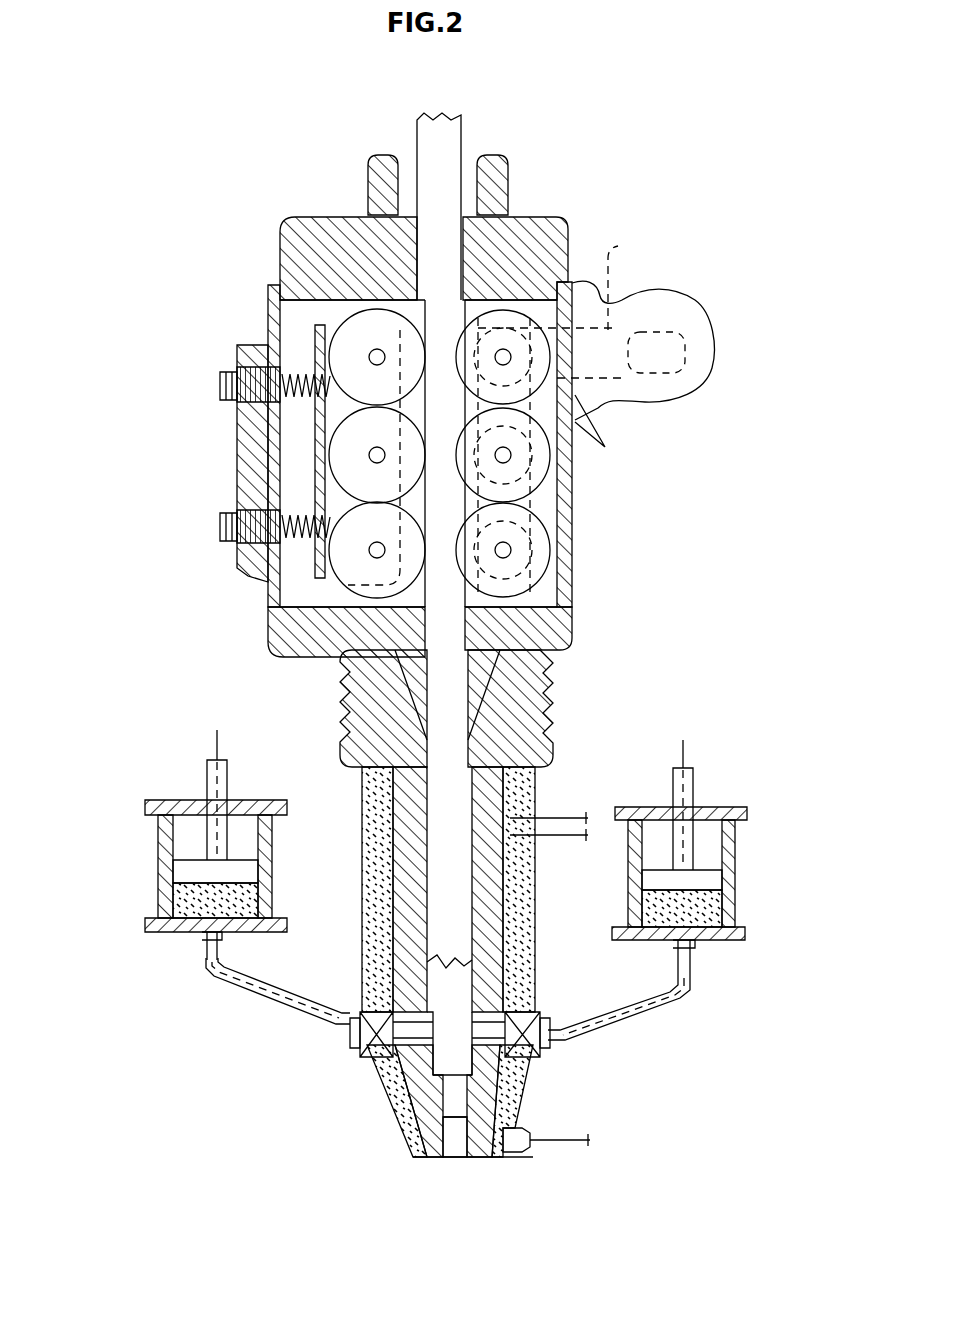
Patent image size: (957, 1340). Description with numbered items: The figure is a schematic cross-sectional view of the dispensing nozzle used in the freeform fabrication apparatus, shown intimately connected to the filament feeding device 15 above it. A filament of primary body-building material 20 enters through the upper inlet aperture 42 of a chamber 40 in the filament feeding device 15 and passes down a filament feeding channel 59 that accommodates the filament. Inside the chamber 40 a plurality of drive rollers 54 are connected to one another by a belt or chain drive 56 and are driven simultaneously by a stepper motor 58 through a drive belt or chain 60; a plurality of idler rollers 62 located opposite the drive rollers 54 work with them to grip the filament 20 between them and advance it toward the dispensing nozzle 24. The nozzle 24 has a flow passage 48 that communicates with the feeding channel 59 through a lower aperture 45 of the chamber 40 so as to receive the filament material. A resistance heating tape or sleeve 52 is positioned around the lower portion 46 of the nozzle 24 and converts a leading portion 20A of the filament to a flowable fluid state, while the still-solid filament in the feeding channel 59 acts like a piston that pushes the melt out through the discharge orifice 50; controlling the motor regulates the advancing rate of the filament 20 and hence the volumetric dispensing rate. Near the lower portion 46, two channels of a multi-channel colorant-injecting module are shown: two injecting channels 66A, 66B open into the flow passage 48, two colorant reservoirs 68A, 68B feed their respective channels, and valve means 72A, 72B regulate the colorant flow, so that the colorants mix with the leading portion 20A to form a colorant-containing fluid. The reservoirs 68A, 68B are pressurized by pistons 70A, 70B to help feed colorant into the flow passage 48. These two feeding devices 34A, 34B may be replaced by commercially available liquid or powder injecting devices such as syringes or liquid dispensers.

The filament feeding device 15 is at (778, 120).
The primary body-building material 20 is at (457, 925).
The leading portion of the filament material 20A is at (410, 1103).
The dispensing nozzle 24 is at (598, 754).
The feeding device 34A is at (130, 857).
The feeding device 34B is at (765, 878).
The chamber 40 is at (548, 588).
The upper inlet aperture 42 is at (417, 240).
The lower aperture 45 is at (340, 660).
The lower portion of the nozzle 46 is at (360, 948).
The flow passage 48 is at (462, 1000).
The discharge orifice 50 is at (453, 1153).
The resistance heating tape or sleeve 52 is at (367, 863).
The drive rollers 54 is at (605, 447).
The belt or chain drive 56 is at (572, 483).
The stepper motor 58 is at (695, 290).
The filament feeding channel 59 is at (350, 318).
The drive belt or chain 60 is at (565, 271).
The idler rollers 62 is at (280, 233).
The injecting channel 66A is at (273, 1010).
The injecting channel 66B is at (620, 1018).
The colorant reservoir 68A is at (152, 895).
The colorant reservoir 68B is at (732, 908).
The piston 70A is at (203, 773).
The piston 70B is at (698, 785).
The valve means 72A is at (355, 1058).
The valve means 72B is at (548, 1053).